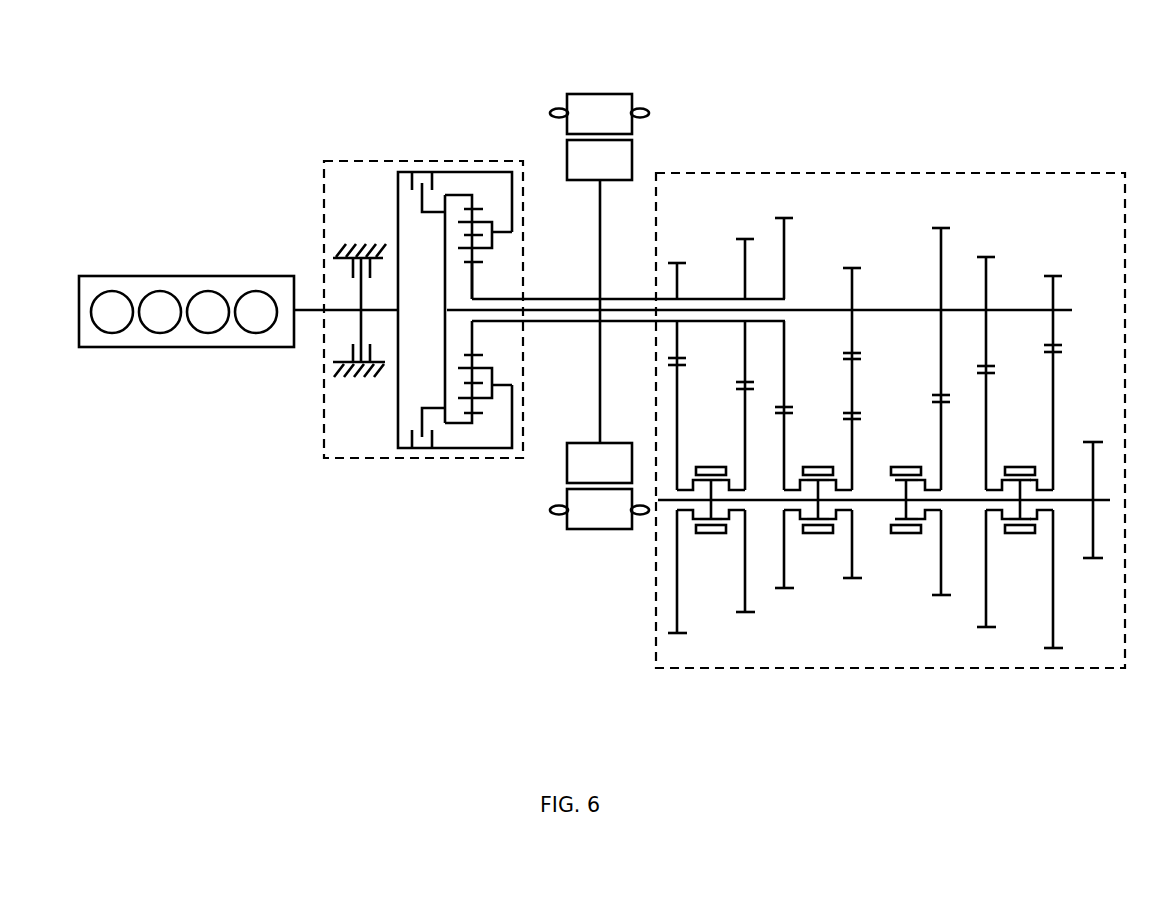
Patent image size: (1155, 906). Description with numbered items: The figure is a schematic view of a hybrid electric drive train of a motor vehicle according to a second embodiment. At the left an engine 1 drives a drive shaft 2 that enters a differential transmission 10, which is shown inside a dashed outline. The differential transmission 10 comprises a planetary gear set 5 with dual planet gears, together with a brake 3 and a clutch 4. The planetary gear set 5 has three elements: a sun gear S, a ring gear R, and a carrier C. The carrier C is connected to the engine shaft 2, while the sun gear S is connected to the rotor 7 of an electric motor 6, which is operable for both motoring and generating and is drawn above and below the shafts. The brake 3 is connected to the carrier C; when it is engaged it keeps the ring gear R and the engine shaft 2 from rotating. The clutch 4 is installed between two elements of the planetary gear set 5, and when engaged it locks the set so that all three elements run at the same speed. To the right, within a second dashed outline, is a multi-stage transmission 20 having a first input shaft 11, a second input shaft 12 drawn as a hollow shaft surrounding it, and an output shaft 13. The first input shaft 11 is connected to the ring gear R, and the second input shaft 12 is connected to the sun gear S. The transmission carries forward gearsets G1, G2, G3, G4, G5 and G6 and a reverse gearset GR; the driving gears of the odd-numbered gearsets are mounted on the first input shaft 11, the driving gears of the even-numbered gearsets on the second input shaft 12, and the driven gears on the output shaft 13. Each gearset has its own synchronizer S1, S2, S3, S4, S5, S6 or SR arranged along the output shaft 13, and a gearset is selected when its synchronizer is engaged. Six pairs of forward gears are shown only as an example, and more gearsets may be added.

The engine 1 is at (208, 268).
The drive shaft 2 is at (306, 300).
The brake 3 is at (362, 226).
The clutch 4 is at (425, 163).
The planetary gear set 5 is at (504, 220).
The electric motor 6 is at (597, 91).
The rotor 7 is at (637, 160).
The differential transmission 10 is at (405, 469).
The first input shaft 11 is at (826, 301).
The second input shaft 12 is at (723, 290).
The output shaft 13 is at (1073, 491).
The multi-stage transmission 20 is at (653, 603).
The ring gear R is at (483, 201).
The carrier C is at (496, 246).
The sun gear S is at (483, 278).
The first forward gearset G1 is at (1049, 440).
The second forward gearset G2 is at (683, 432).
The third forward gearset G3 is at (991, 420).
The fourth forward gearset G4 is at (740, 408).
The fifth forward gearset G5 is at (936, 394).
The sixth forward gearset G6 is at (789, 388).
The reverse gearset GR is at (846, 405).
The synchronizer of first gearset S1 is at (1025, 529).
The synchronizer of second gearset S2 is at (704, 513).
The synchronizer of third gearset S3 is at (1014, 513).
The synchronizer of fourth gearset S4 is at (718, 529).
The synchronizer of fifth gearset S5 is at (906, 513).
The synchronizer of sixth gearset S6 is at (811, 513).
The reverse synchronizer SR is at (826, 529).